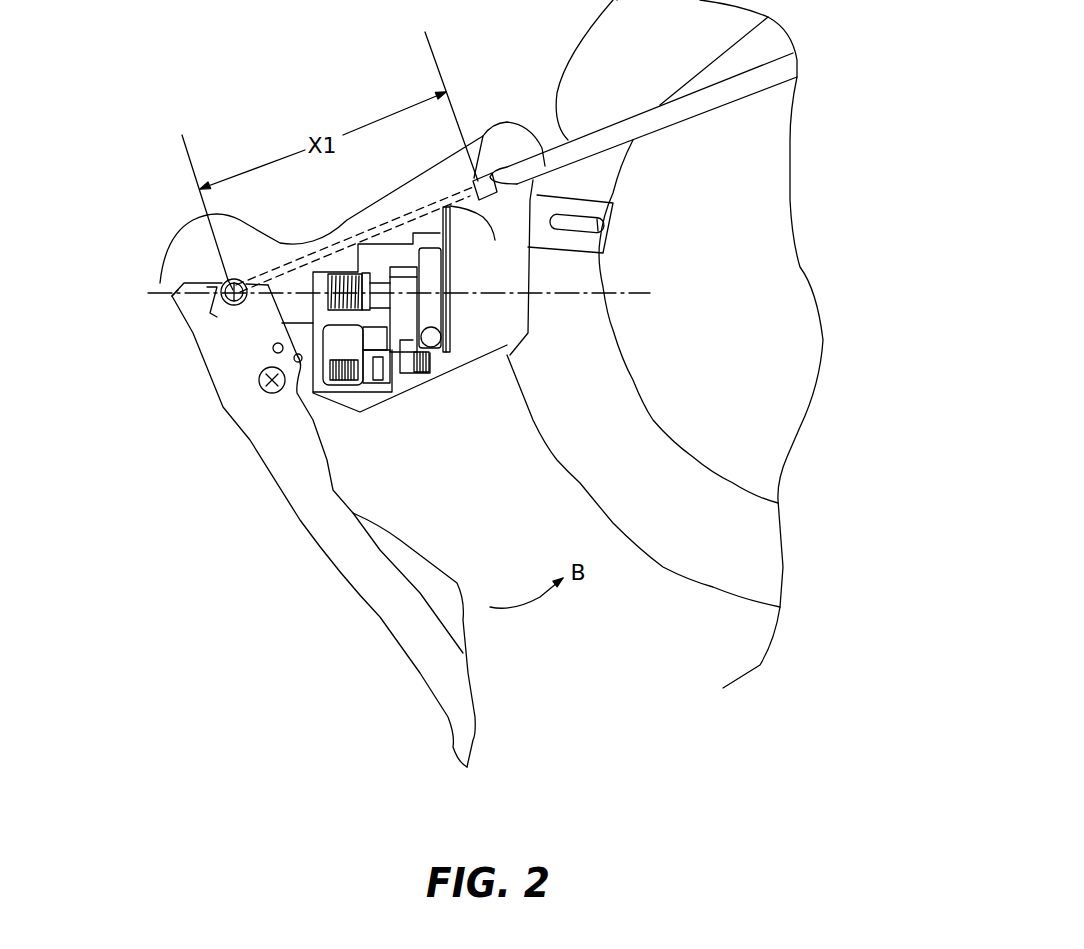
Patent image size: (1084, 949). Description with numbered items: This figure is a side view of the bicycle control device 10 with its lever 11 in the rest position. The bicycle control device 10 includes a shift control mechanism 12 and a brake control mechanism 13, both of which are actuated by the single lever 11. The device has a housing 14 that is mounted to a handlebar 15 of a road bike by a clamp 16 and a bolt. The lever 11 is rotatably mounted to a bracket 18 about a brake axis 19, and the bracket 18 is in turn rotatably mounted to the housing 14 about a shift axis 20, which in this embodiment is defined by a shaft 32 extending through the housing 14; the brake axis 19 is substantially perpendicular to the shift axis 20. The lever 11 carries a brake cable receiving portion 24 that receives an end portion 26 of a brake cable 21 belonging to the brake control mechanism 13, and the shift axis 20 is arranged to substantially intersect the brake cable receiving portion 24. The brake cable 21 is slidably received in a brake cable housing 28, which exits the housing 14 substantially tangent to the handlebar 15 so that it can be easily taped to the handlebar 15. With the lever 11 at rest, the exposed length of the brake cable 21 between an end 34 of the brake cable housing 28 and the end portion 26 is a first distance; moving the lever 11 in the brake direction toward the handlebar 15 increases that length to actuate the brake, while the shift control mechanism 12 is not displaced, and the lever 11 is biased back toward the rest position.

The bicycle control device 10 is at (178, 436).
The lever 11 is at (292, 472).
The shift control mechanism 12 is at (407, 400).
The brake control mechanism 13 is at (191, 268).
The housing 14 is at (480, 374).
The handlebar 15 is at (633, 430).
The clamp 16 is at (593, 218).
The bracket 18 is at (305, 397).
The brake axis 19 is at (258, 371).
The shift axis 20 is at (620, 292).
The brake cable 21 is at (461, 279).
The brake cable receiving portion 24 is at (237, 306).
The end portion 26 is at (190, 220).
The brake cable housing 28 is at (562, 65).
The shaft 32 is at (425, 374).
The end 34 is at (480, 174).